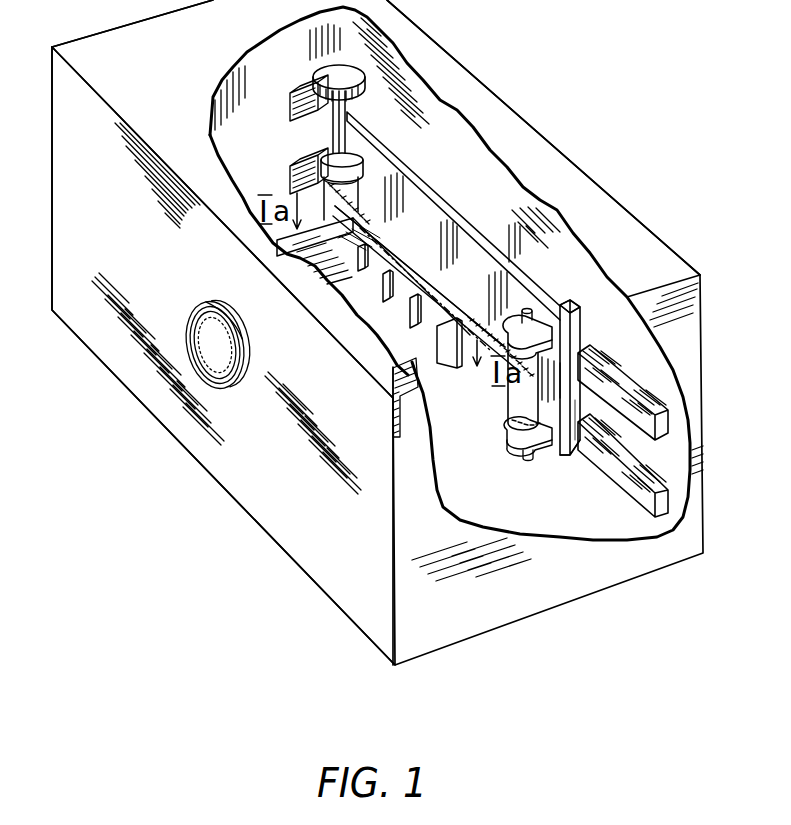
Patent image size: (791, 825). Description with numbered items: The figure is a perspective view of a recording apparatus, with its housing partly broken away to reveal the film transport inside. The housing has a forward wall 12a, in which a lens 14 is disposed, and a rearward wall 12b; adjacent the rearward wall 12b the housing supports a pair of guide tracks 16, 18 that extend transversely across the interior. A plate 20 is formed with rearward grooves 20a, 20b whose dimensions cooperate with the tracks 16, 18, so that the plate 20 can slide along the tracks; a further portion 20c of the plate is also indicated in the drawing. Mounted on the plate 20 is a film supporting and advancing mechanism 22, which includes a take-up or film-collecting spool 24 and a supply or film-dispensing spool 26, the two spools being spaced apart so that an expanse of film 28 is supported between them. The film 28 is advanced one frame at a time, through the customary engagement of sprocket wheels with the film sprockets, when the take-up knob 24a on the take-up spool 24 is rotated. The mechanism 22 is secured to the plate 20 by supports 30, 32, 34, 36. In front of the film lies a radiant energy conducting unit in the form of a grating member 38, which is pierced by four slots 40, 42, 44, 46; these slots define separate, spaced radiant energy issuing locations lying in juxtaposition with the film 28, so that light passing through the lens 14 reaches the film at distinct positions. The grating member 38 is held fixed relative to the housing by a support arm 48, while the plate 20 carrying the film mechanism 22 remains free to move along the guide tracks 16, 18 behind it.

The forward wall 12a is at (167, 173).
The rearward wall 12b is at (481, 142).
The lens 14 is at (200, 332).
The guide track 16 is at (607, 377).
The guide track 18 is at (633, 487).
The plate 20 is at (458, 217).
The rearward groove 20a is at (580, 350).
The rearward groove 20b is at (578, 440).
The bracket plate portion 20c is at (577, 400).
The film supporting and advancing mechanism 22 is at (488, 287).
The take-up spool 24 is at (353, 190).
The take-up knob 24a is at (322, 72).
The supply spool 26 is at (532, 403).
The film 28 is at (425, 273).
The support 30 is at (323, 152).
The support 32 is at (392, 228).
The support 34 is at (520, 440).
The support 36 is at (540, 322).
The grating member 38 is at (400, 307).
The slot 40 is at (357, 272).
The slot 42 is at (385, 293).
The slot 44 is at (413, 317).
The slot 46 is at (437, 338).
The support arm 48 is at (303, 250).